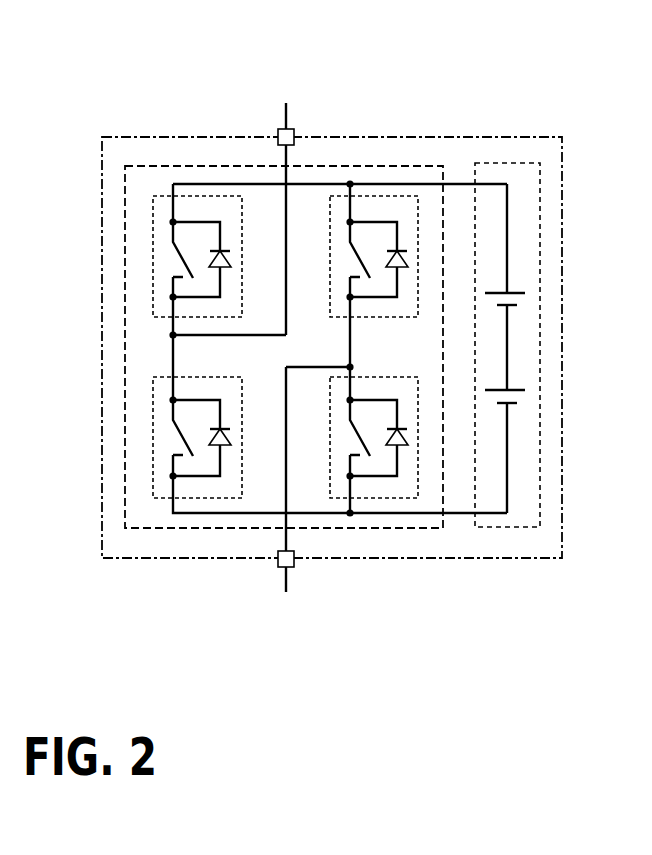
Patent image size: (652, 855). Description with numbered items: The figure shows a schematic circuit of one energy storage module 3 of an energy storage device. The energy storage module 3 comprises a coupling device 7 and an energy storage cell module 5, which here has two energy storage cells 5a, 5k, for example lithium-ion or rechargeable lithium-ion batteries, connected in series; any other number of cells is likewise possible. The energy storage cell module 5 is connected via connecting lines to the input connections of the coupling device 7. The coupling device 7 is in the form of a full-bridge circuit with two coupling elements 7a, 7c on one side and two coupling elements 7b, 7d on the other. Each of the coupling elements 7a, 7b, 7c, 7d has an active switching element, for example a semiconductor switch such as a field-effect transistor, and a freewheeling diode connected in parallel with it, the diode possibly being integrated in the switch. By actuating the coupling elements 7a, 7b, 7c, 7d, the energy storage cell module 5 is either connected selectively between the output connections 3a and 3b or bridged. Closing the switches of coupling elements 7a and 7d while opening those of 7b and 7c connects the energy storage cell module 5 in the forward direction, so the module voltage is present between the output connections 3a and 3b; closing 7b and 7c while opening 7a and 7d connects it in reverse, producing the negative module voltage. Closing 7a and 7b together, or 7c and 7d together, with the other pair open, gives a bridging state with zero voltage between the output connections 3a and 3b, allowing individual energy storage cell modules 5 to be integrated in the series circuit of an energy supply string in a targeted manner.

The energy storage module 3 is at (140, 137).
The output connection 3a is at (294, 130).
The output connection 3b is at (277, 563).
The energy storage cell module 5 is at (544, 295).
The energy storage cell 5a is at (522, 296).
The energy storage cell 5k is at (522, 393).
The coupling device 7 is at (187, 166).
The coupling element 7a is at (223, 195).
The coupling element 7b is at (388, 197).
The coupling element 7c is at (162, 500).
The coupling element 7d is at (390, 503).